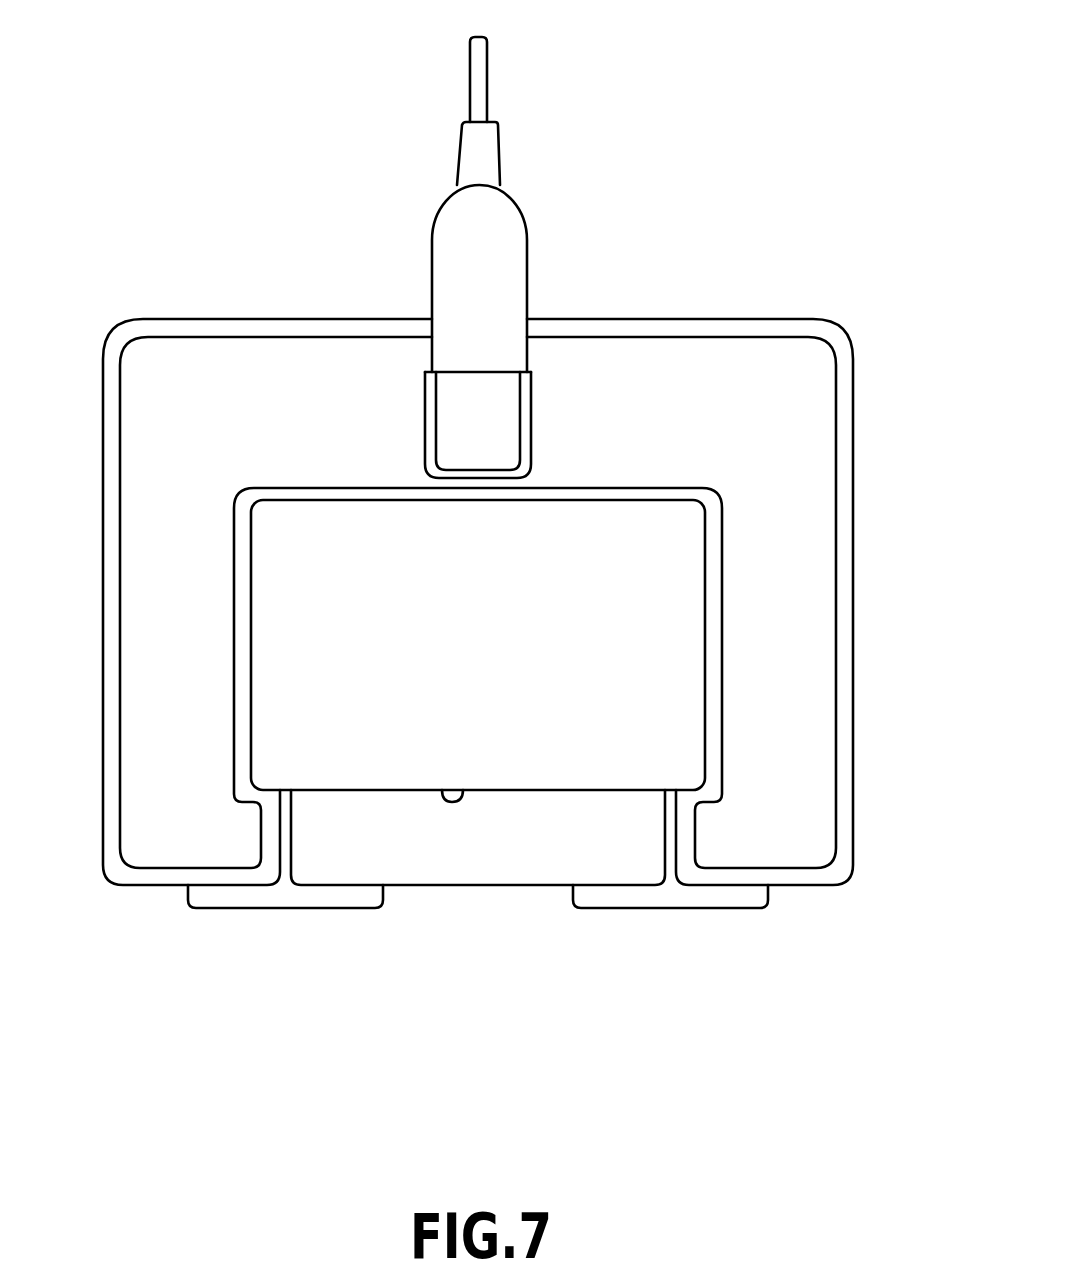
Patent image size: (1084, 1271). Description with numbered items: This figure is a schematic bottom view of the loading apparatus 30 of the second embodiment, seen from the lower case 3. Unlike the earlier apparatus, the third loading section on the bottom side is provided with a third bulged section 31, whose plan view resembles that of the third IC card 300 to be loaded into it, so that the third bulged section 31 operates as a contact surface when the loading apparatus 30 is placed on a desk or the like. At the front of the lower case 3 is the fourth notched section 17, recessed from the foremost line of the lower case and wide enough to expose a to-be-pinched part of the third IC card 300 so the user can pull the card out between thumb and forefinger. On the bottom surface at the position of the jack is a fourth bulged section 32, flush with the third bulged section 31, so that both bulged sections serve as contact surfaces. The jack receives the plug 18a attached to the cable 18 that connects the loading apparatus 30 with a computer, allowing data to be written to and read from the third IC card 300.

The lower case 3 is at (800, 567).
The fourth notched section 17 is at (462, 790).
The cable 18 is at (482, 75).
The plug 18a is at (478, 215).
The loading apparatus 30 is at (797, 87).
The third bulged section 31 is at (630, 555).
The fourth bulged section 32 is at (493, 435).
The third IC card 300 is at (470, 868).